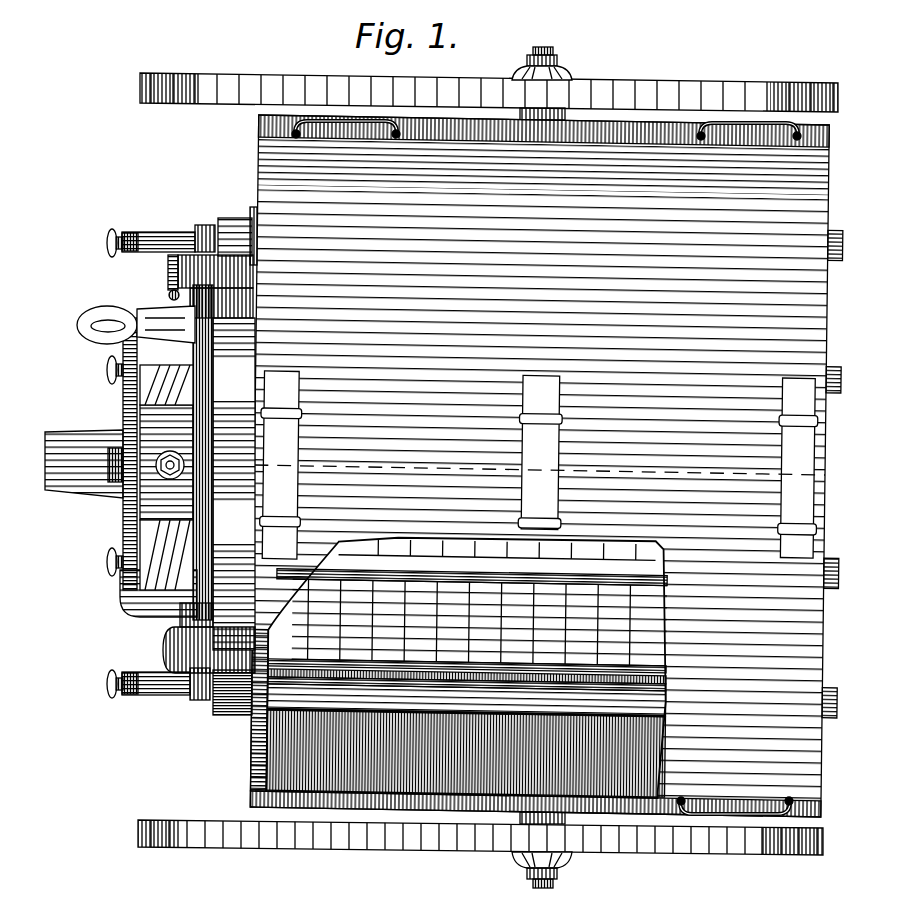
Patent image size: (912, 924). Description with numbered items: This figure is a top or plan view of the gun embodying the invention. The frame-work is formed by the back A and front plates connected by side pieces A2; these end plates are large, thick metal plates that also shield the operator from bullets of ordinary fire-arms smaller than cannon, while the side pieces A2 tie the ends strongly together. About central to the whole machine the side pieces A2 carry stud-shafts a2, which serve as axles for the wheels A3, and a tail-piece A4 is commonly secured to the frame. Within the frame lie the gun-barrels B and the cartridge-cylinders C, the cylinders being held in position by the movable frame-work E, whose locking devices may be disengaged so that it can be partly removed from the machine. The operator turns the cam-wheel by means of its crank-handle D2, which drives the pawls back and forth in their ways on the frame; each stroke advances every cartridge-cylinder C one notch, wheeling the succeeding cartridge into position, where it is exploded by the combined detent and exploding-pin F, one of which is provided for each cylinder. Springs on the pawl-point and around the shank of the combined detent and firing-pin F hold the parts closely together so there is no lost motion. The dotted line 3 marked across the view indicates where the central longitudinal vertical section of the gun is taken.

The back of the frame-work A is at (445, 472).
The side pieces of the frame-work A2 is at (504, 811).
The wheels A3 is at (612, 866).
The tail-piece A4 is at (79, 496).
The gun-barrels B is at (840, 493).
The cartridge-cylinders C is at (238, 226).
The crank-handle D2 is at (112, 322).
The movable frame-work E is at (176, 240).
The combined detents and exploding-pins F is at (107, 243).
The stud-shafts a2 is at (548, 50).
The dotted line 3 3 is at (442, 470).